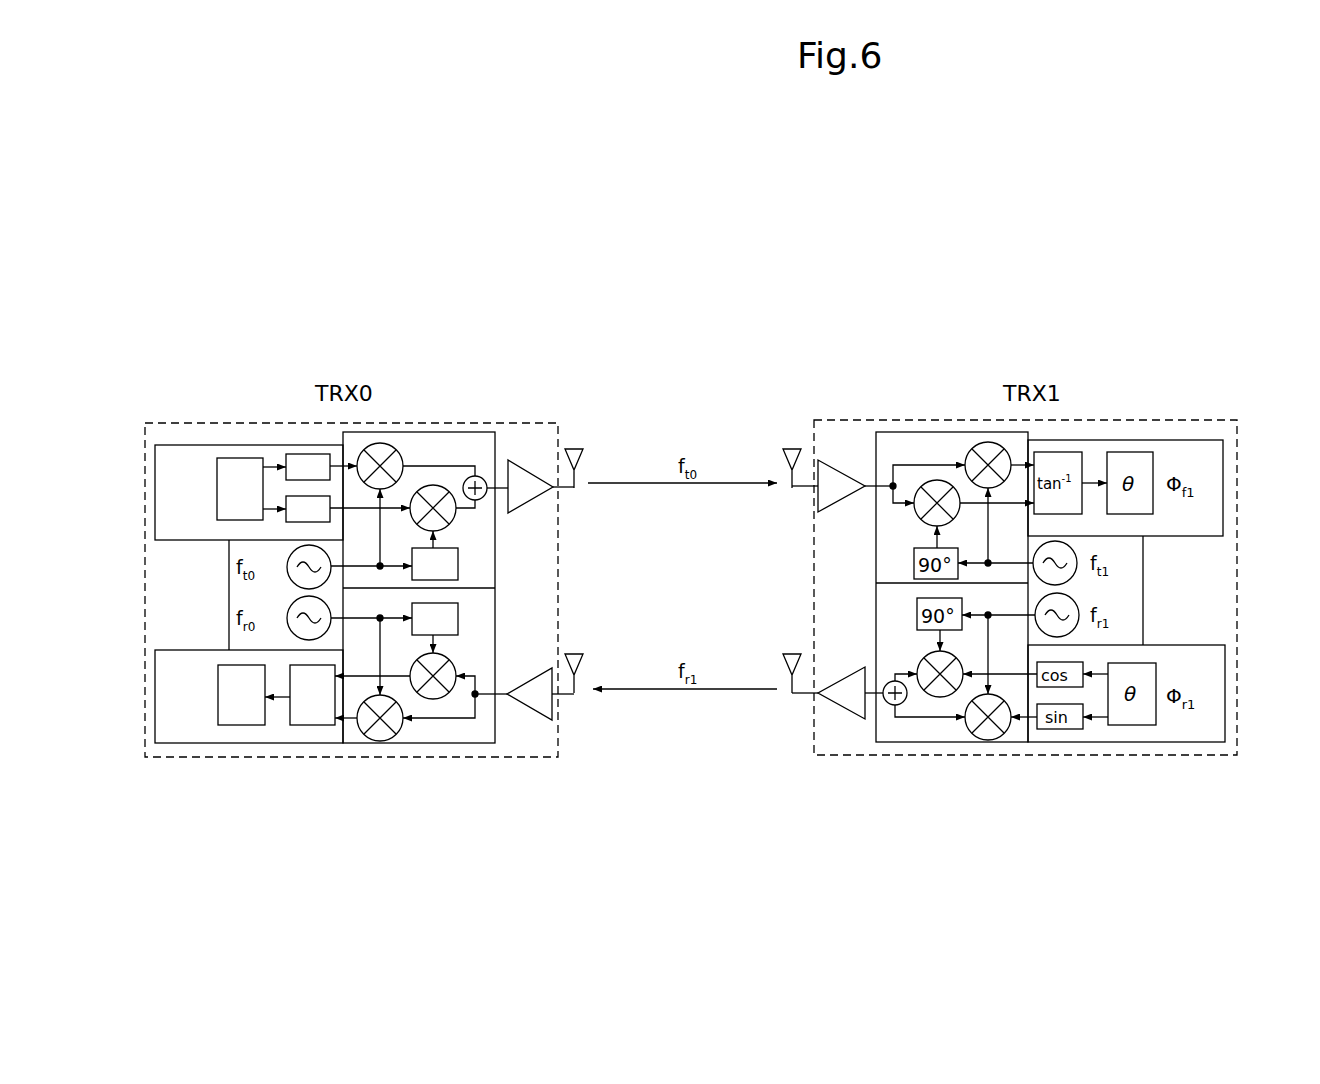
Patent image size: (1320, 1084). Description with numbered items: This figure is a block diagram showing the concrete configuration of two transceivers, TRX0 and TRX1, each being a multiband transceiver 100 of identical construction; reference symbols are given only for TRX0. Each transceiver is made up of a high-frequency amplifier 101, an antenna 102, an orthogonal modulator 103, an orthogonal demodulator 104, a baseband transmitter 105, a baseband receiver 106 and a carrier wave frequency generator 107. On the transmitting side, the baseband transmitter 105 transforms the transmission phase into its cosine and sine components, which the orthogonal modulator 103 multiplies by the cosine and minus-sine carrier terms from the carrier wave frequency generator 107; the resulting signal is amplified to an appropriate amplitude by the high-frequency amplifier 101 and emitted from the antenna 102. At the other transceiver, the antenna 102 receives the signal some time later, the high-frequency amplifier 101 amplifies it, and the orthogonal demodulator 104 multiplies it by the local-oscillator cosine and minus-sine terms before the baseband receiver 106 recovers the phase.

The multiband transceiver 100 is at (515, 423).
The high-frequency amplifier 101 is at (527, 503).
The antenna 102 is at (574, 489).
The orthogonal modulator 103 is at (443, 432).
The orthogonal demodulator 104 is at (475, 744).
The baseband transmitter 105 is at (232, 444).
The baseband receiver 106 is at (255, 745).
The carrier wave frequency generator 107 is at (228, 618).